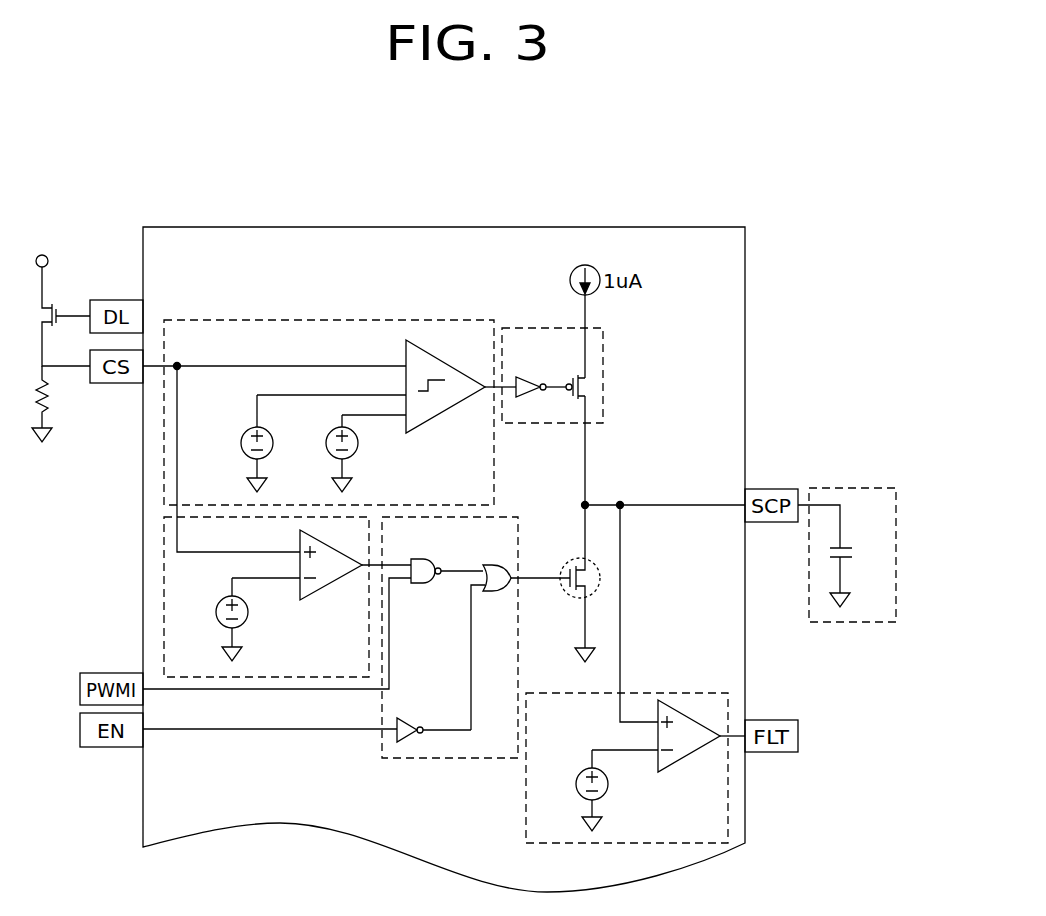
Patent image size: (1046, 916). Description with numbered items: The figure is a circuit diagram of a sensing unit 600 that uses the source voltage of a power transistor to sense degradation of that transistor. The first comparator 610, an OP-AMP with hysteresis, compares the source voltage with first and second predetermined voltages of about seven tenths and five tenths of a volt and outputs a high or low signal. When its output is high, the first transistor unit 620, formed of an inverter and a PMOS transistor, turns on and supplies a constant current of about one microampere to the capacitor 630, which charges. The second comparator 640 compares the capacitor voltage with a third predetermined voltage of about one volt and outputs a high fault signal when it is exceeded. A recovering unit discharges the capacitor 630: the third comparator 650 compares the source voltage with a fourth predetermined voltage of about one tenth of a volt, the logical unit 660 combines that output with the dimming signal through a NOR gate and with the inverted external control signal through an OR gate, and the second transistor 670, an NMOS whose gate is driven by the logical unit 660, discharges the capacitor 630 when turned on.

The sensing unit 600 is at (711, 226).
The first comparator 610 is at (322, 320).
The first transistor unit 620 is at (603, 405).
The capacitor 630 is at (824, 488).
The second comparator 640 is at (526, 823).
The third comparator 650 is at (164, 580).
The logical unit 660 is at (382, 757).
The second transistor 670 is at (572, 562).